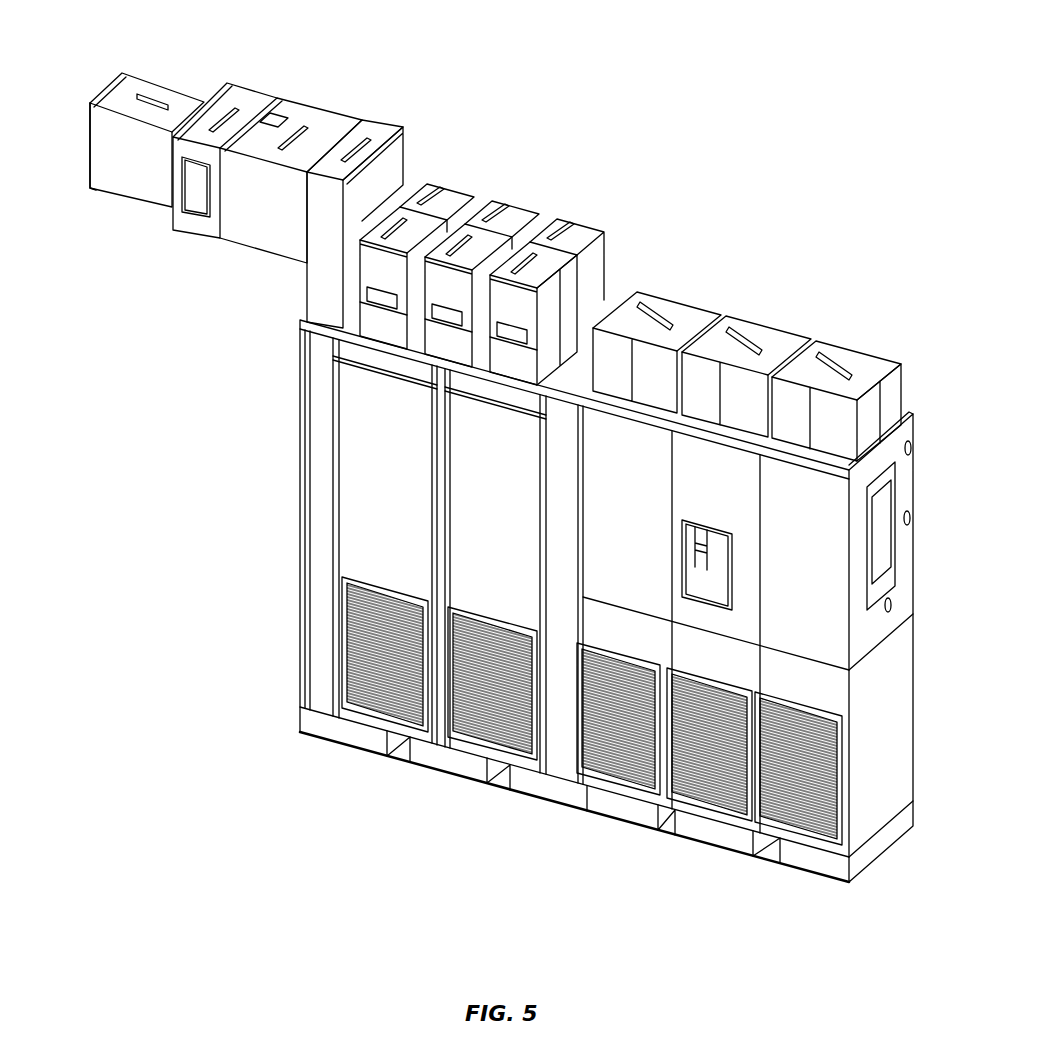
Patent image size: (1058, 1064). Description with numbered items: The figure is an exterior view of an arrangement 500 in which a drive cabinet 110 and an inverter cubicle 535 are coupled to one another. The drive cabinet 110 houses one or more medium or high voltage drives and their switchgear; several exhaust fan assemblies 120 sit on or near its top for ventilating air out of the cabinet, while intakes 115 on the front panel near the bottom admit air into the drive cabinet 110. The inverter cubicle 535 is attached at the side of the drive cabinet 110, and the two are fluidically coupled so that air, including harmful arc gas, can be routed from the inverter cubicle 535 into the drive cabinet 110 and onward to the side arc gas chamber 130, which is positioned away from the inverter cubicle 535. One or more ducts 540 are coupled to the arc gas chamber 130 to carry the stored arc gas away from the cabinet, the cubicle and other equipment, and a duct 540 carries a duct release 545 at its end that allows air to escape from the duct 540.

The electrical system 500 is at (783, 70).
The drive cabinet 110 is at (300, 377).
The intakes 115 is at (367, 692).
The exhaust fan assemblies 120 is at (600, 263).
The arc gas chamber 130 is at (407, 155).
The inverter cubicle 535 is at (915, 428).
The ducts 540 is at (293, 102).
The duct release 545 is at (90, 157).